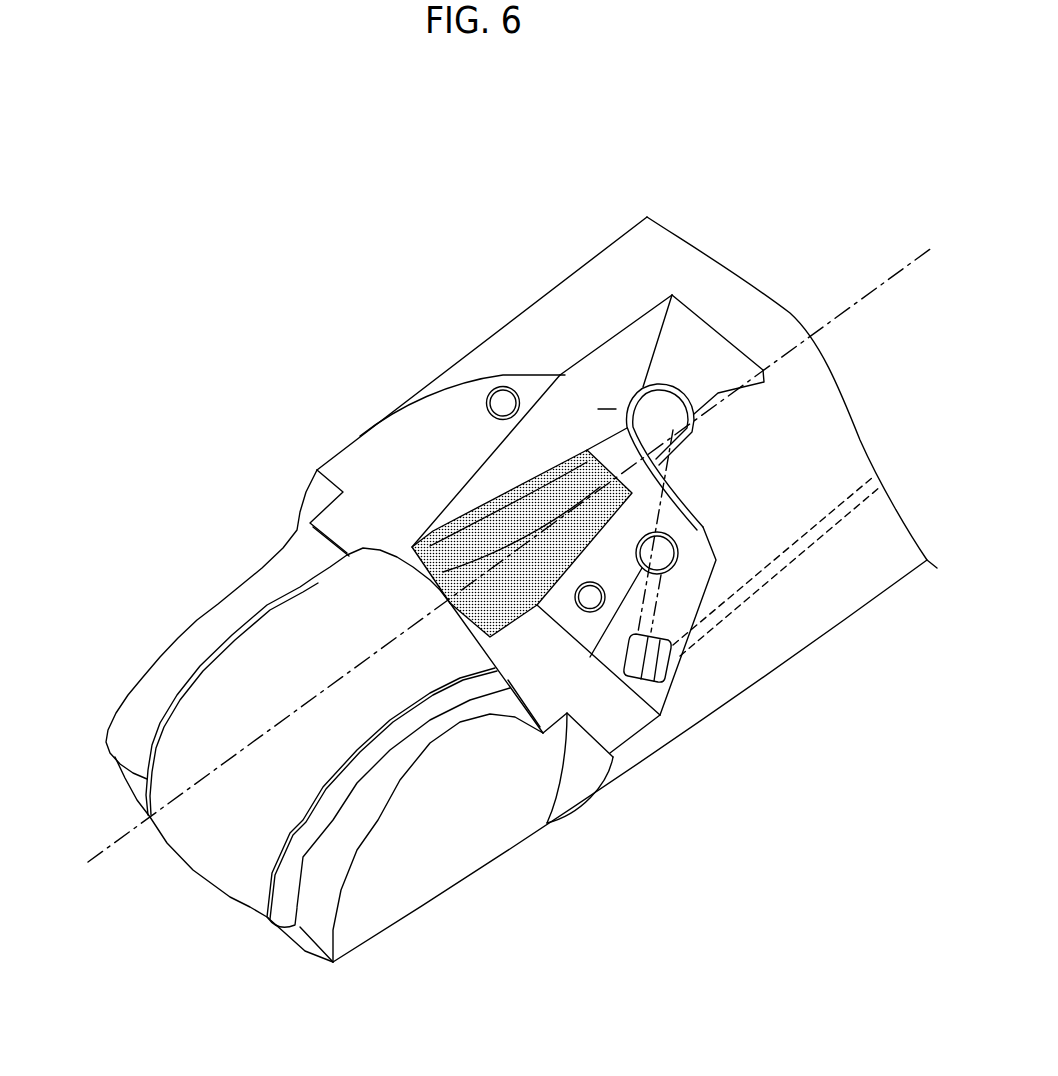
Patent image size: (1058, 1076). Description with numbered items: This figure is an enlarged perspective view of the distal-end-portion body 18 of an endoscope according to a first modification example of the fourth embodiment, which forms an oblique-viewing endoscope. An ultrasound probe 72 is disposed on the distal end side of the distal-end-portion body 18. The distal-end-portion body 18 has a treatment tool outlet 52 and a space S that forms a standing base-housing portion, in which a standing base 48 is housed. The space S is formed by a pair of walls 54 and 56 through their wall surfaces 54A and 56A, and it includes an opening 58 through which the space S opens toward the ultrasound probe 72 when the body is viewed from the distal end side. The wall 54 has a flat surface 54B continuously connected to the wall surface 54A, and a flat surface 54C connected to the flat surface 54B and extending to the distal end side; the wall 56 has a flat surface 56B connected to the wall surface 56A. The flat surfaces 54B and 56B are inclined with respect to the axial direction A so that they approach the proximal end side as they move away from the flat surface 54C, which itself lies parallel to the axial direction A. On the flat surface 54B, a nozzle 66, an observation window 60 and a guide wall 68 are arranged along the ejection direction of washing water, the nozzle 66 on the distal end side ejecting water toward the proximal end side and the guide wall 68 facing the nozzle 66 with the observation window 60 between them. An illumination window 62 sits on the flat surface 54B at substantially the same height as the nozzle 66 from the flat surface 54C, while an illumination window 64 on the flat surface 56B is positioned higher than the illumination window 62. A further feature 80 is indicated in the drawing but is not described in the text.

The distal-end-portion body 18 is at (548, 212).
The standing base 48 is at (500, 507).
The treatment tool outlet 52 is at (668, 412).
The wall 54 is at (808, 394).
The wall surface 54A is at (718, 390).
The flat surface 54B is at (693, 582).
The flat surface 54C is at (607, 713).
The wall 56 is at (512, 312).
The wall surface 56A is at (617, 353).
The flat surface 56B is at (353, 473).
The opening 58 is at (648, 332).
The observation window 60 is at (594, 657).
The illumination window 62 is at (576, 600).
The illumination window 64 is at (497, 397).
The nozzle 66 is at (665, 682).
The guide wall 68 is at (680, 480).
The ultrasound probe 72 is at (305, 597).
The hidden passage 80 is at (748, 590).
The axial direction A is at (497, 568).
The space S is at (607, 392).